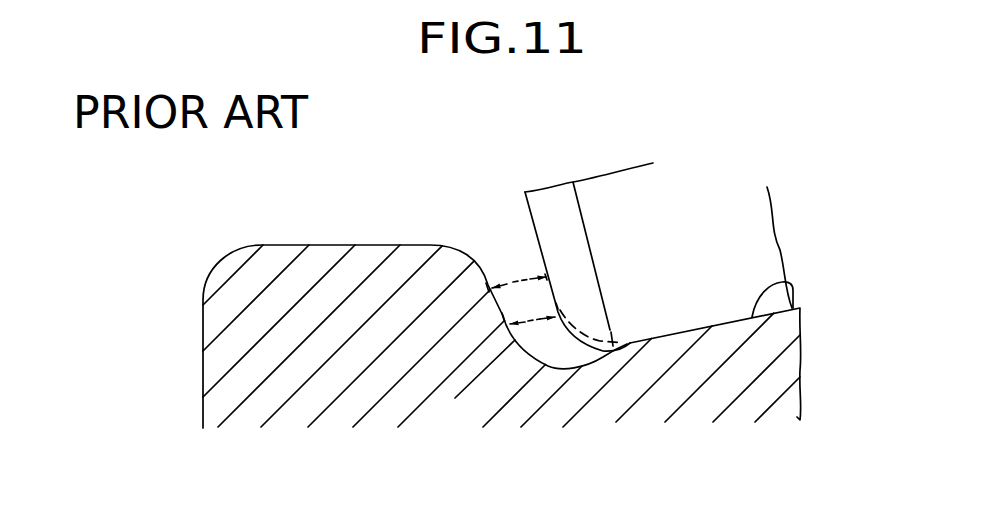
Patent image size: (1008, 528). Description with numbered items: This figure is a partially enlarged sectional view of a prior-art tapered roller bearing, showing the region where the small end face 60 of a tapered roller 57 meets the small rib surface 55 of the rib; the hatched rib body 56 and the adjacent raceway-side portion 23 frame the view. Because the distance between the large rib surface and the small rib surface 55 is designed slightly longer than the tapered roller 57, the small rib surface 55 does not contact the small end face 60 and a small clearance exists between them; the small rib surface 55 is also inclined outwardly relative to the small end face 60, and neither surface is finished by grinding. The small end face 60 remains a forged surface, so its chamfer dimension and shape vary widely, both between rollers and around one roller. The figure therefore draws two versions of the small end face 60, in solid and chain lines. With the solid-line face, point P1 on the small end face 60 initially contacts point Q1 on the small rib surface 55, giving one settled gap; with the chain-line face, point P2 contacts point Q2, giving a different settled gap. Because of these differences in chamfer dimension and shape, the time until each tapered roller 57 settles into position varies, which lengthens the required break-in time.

The large rib (flange) of inner ring 56 is at (238, 378).
The small rib surface 55 is at (502, 323).
The small end face 60 is at (527, 215).
The raceway surface 23 is at (783, 280).
The tapered roller 57 is at (762, 218).
The point Q2 is at (488, 290).
The point Q1 is at (503, 322).
The point P2 is at (547, 277).
The point P1 is at (557, 306).